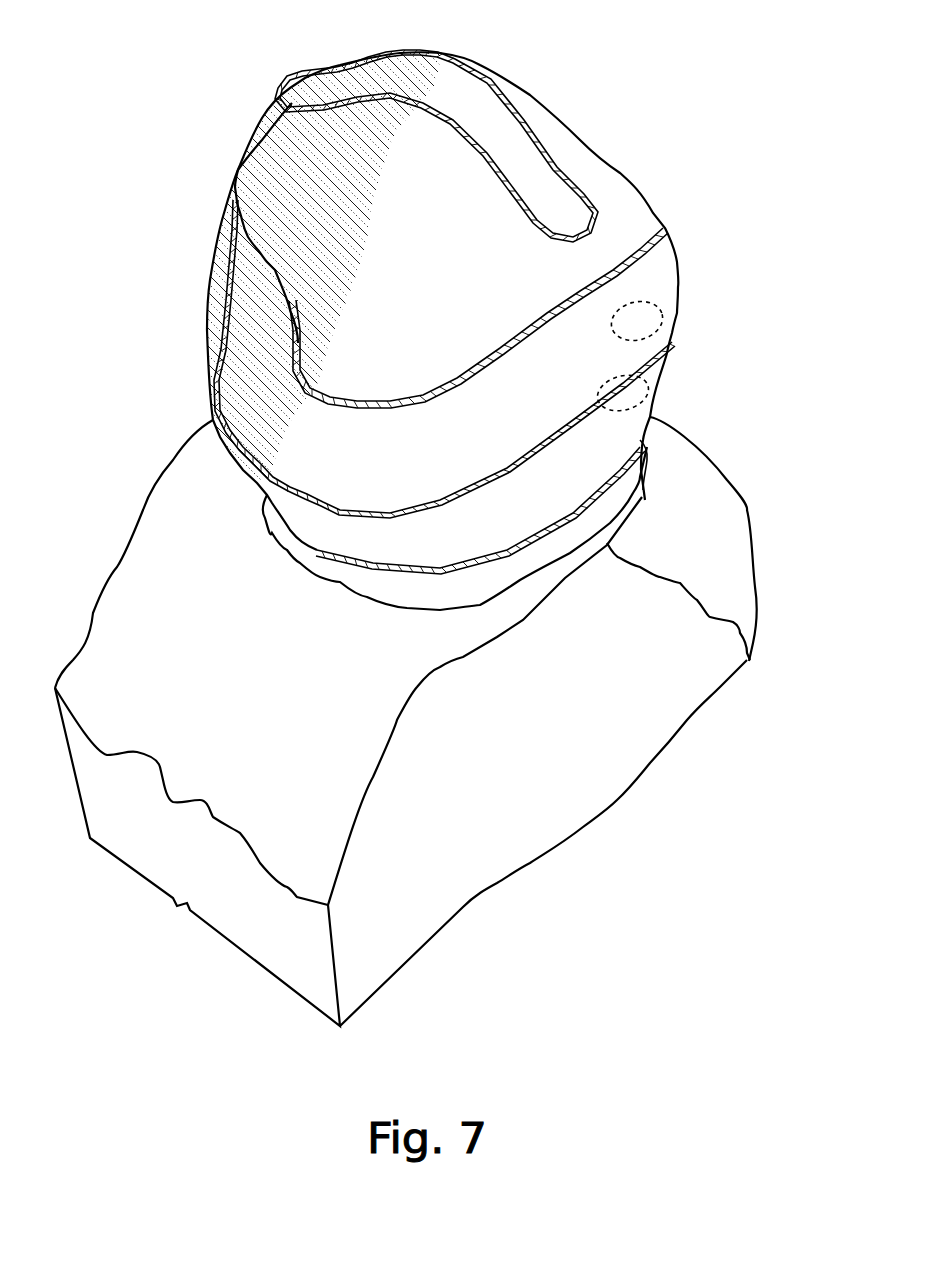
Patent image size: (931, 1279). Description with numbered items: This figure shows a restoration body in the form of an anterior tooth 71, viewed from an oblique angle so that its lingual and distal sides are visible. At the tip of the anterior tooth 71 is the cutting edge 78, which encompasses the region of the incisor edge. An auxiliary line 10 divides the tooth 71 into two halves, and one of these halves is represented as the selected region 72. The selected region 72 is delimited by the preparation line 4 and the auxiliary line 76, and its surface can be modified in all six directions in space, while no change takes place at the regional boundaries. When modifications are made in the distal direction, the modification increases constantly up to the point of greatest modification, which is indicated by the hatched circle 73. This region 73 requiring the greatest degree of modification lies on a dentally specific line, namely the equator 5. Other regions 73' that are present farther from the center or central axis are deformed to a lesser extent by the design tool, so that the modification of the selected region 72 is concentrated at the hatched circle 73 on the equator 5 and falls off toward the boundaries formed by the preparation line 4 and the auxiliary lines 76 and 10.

The anterior tooth 71 is at (688, 73).
The selected region 72 is at (660, 257).
The hatched circle (region of greatest modification) 73 is at (689, 393).
The other regions 73' is at (698, 312).
The auxiliary line 76 is at (395, 385).
The cutting edge 78 is at (545, 126).
The equator 5 is at (410, 495).
The preparation line 4 is at (348, 548).
The auxiliary line 10 is at (367, 238).